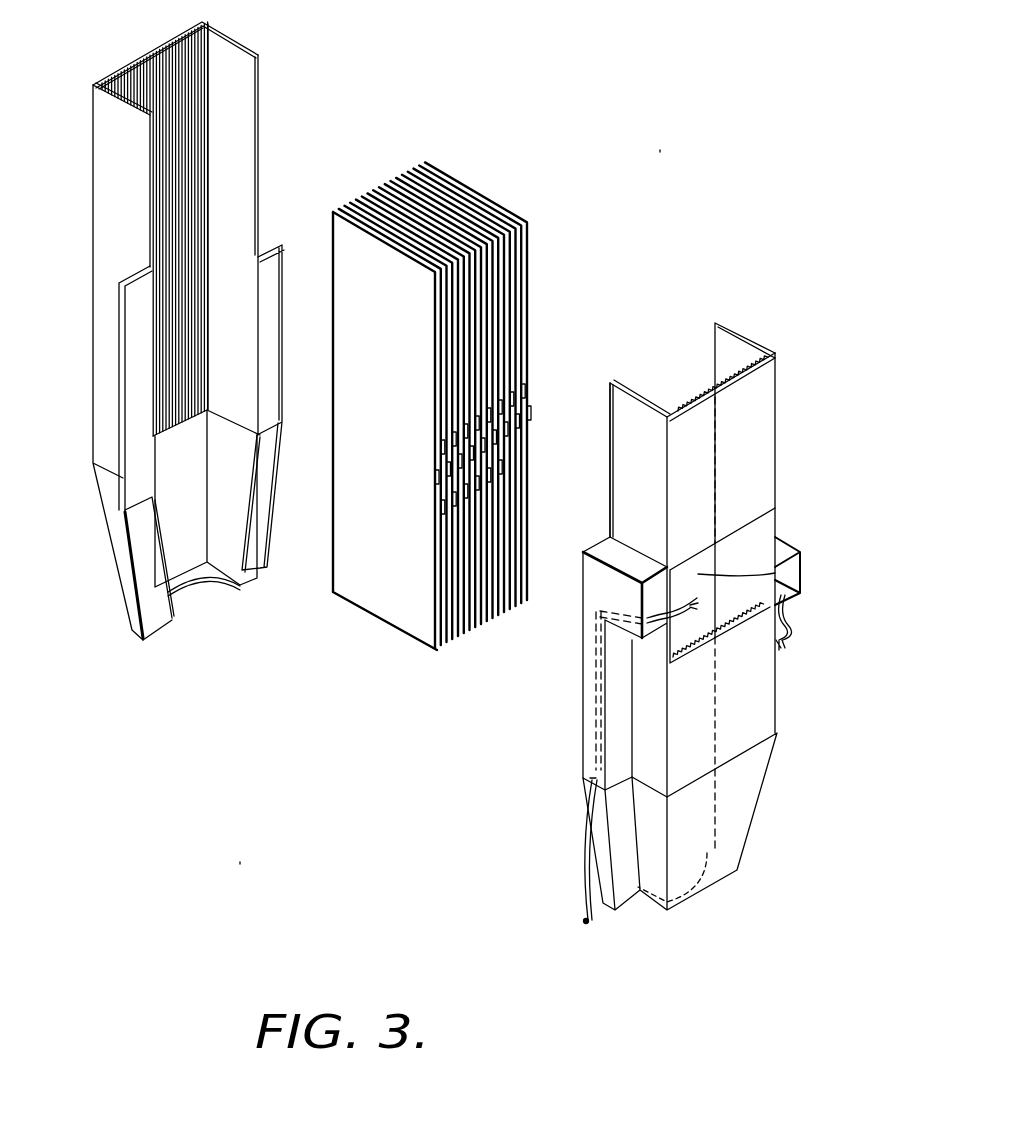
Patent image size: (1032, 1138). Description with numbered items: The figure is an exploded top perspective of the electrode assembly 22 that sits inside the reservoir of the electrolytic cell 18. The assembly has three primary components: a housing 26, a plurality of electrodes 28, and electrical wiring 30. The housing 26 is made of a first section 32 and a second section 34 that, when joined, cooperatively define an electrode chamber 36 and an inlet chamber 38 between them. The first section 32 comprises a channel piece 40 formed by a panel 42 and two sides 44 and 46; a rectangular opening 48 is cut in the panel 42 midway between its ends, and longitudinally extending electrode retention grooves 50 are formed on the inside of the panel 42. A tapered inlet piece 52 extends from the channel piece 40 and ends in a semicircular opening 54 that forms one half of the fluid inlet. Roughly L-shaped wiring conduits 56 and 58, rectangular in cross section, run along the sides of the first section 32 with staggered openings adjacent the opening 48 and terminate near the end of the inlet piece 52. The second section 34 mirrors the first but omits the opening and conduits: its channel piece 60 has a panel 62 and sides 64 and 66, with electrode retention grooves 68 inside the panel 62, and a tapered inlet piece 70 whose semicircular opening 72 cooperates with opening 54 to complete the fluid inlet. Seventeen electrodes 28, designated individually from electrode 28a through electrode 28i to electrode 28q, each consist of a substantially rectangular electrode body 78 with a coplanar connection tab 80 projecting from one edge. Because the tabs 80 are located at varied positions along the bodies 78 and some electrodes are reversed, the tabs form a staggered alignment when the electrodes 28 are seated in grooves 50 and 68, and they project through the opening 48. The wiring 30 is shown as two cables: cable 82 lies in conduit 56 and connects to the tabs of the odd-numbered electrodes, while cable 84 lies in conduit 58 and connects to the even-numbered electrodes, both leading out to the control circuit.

The electrolytic cell 18 is at (240, 862).
The electrode assembly 22 is at (325, 667).
The housing 26 is at (560, 64).
The electrodes 28 is at (372, 163).
The electrode 28a is at (440, 657).
The electrode 28i is at (484, 628).
The electrode 28q is at (530, 604).
The electrical wiring 30 is at (783, 630).
The first section 32 is at (780, 405).
The second section 34 is at (86, 120).
The electrode chamber 36 is at (214, 80).
The inlet chamber 38 is at (228, 479).
The channel piece 40 is at (742, 694).
The panel 42 is at (740, 445).
The side 44 is at (772, 545).
The side 46 is at (628, 461).
The rectangular opening 48 is at (775, 573).
The electrode retention grooves 50 is at (697, 392).
The inlet piece 52 is at (760, 806).
The semicircular opening 54 is at (705, 882).
The wiring conduit 56 is at (588, 763).
The wiring conduit 58 is at (800, 553).
The channel piece 60 is at (263, 193).
The panel 62 is at (127, 62).
The side 64 is at (230, 145).
The side 66 is at (122, 233).
The electrode retention grooves 68 is at (187, 32).
The inlet piece 70 is at (112, 503).
The semicircular opening 72 is at (198, 596).
The electrode body 78 is at (365, 548).
The connection tab 80 is at (530, 368).
The cable 82 is at (590, 822).
The cable 84 is at (790, 610).